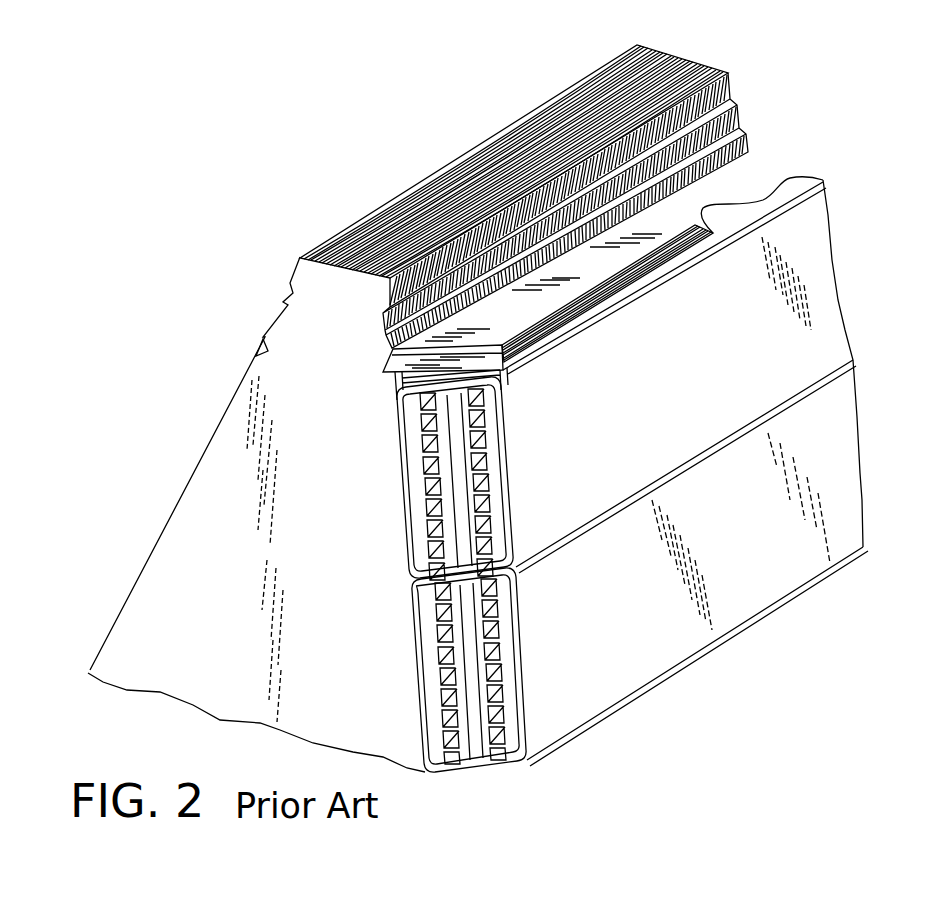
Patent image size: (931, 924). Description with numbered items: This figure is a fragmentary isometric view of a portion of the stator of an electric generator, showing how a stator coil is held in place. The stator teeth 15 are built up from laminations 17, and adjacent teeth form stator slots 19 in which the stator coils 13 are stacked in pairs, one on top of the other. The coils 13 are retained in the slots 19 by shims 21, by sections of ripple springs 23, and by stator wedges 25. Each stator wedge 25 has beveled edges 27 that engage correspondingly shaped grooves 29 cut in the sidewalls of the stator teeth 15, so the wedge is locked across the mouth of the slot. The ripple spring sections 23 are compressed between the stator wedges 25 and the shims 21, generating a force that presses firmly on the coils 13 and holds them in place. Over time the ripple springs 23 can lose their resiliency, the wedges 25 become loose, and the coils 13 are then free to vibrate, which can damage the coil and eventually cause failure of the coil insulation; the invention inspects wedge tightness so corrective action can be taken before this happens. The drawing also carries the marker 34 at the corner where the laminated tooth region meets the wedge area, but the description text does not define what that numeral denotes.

The stator coil 13 is at (447, 497).
The stator tooth 15 is at (187, 523).
The lamination 17 is at (345, 236).
The stator slot 19 is at (424, 537).
The shim 21 is at (485, 400).
The ripple spring section 23 is at (693, 258).
The stator wedge 25 is at (500, 327).
The beveled edge 27 is at (608, 287).
The groove 29 is at (387, 364).
The gap 34 is at (258, 352).